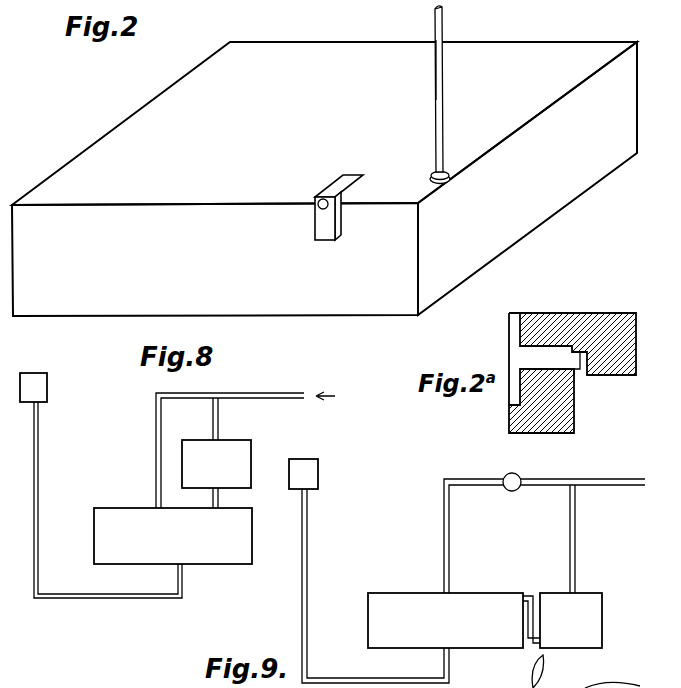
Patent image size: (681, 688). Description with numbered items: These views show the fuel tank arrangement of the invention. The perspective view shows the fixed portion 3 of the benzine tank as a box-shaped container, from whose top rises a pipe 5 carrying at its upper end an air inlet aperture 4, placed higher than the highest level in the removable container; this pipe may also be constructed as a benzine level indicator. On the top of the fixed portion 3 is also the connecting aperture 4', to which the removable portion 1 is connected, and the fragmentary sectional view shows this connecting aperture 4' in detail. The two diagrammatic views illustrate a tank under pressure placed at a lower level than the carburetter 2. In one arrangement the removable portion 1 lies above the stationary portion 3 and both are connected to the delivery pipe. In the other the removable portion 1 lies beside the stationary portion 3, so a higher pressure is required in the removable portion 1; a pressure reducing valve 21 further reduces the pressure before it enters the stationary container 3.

In FIG. 8, the removable portion 1 is at (216, 453).
In FIG. 9, the removable portion 1 is at (571, 566).
In FIG. 8, the carburetter 2 is at (101, 485).
In FIG. 9, the carburetter 2 is at (369, 571).
In FIG. 2, the fixed portion 3 is at (324, 179).
In FIG. 8, the fixed portion 3 is at (214, 478).
In FIG. 9, the fixed portion 3 is at (506, 563).
In FIG. 2, the air inlet aperture 4 is at (446, 56).
In FIG. 2, the connecting aperture 4' is at (325, 207).
In FIG. 2A, the connecting aperture 4' is at (560, 373).
In FIG. 2, the pipe 5 is at (443, 95).
In FIG. 9, the pressure reducing valve 21 is at (517, 493).